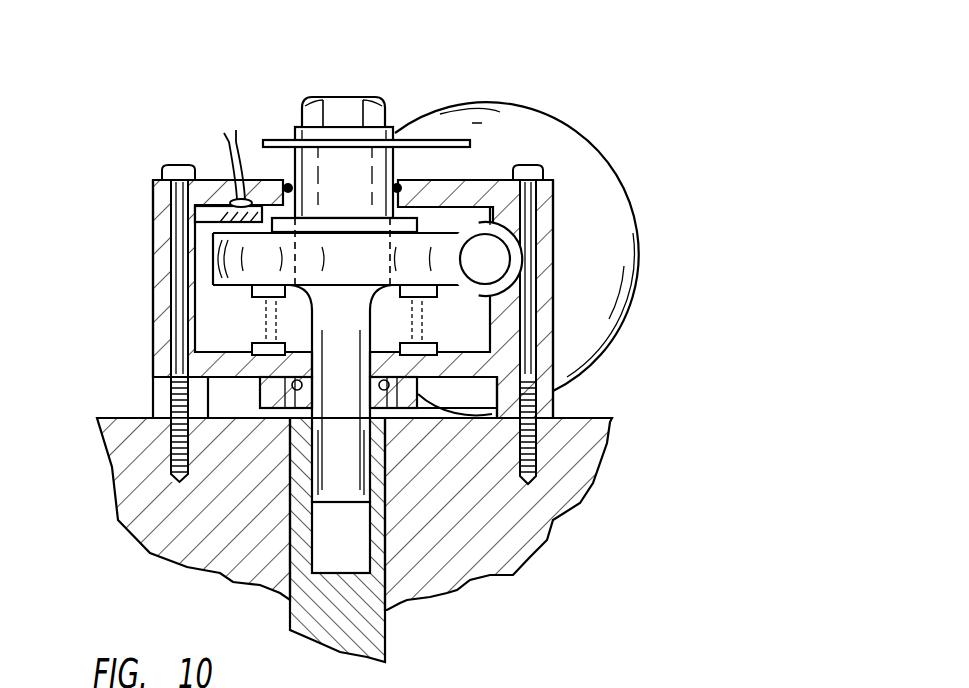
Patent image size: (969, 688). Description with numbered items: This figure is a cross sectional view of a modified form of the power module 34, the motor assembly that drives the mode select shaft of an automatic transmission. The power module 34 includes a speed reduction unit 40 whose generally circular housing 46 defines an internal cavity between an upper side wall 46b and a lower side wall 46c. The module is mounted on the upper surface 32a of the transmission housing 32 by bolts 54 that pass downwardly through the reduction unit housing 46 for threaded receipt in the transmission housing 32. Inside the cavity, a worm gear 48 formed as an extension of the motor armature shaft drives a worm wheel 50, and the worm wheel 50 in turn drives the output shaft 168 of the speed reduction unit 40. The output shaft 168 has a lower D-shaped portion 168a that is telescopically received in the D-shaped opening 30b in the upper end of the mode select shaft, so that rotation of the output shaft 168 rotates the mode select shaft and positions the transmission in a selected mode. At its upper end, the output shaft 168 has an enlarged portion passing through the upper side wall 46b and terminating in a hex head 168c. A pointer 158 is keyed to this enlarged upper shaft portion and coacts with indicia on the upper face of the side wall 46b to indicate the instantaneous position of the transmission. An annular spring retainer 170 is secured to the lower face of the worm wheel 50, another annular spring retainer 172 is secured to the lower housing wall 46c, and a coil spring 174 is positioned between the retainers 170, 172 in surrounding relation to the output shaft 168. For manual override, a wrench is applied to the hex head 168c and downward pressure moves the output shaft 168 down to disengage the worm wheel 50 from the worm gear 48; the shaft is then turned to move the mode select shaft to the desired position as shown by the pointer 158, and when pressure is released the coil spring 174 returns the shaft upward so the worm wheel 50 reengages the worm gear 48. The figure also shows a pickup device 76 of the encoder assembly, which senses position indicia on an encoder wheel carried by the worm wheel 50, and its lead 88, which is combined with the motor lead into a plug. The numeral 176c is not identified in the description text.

The D-shaped opening 30b is at (356, 540).
The transmission housing 32 is at (150, 518).
The upper surface of the housing 32a is at (132, 418).
The power module 34 is at (454, 75).
The speed reduction unit 40 is at (137, 232).
The housing 46 is at (563, 333).
The side wall 46b is at (496, 180).
The side wall 46c is at (418, 393).
The worm gear 48 is at (495, 260).
The worm wheel 50 is at (245, 272).
The bolts 54 is at (535, 165).
The pickup device 76 is at (213, 212).
The lead 88 is at (227, 153).
The pointer 158 is at (275, 140).
The output shaft 168 is at (328, 321).
The lower D-shaped portion 168a is at (320, 468).
The hex head 168c is at (360, 100).
The annular spring retainer 170 is at (425, 295).
The annular spring retainer 172 is at (432, 352).
The coil spring 174 is at (268, 345).
The link (off sheet) 176c is at (590, 687).